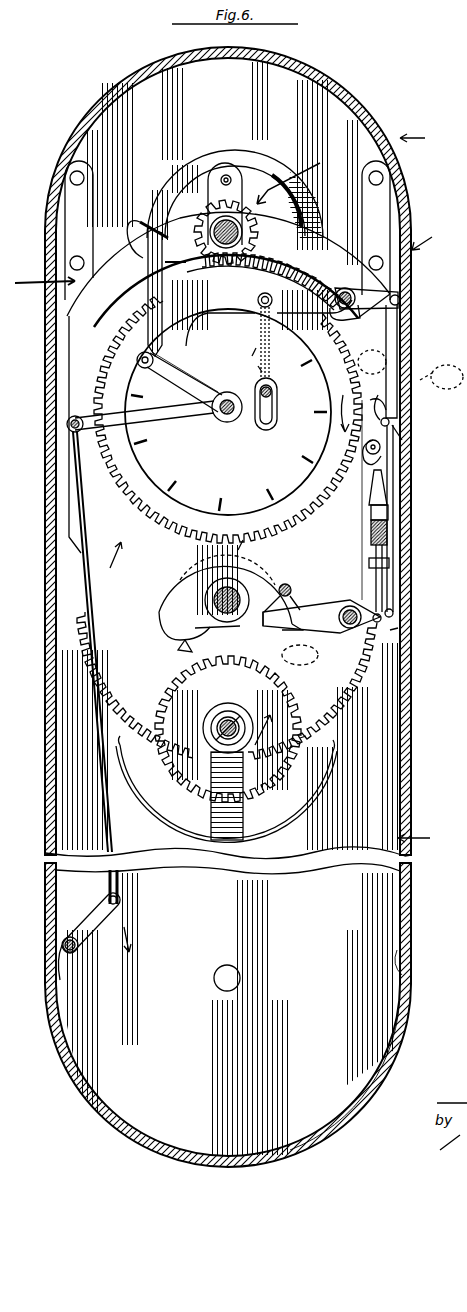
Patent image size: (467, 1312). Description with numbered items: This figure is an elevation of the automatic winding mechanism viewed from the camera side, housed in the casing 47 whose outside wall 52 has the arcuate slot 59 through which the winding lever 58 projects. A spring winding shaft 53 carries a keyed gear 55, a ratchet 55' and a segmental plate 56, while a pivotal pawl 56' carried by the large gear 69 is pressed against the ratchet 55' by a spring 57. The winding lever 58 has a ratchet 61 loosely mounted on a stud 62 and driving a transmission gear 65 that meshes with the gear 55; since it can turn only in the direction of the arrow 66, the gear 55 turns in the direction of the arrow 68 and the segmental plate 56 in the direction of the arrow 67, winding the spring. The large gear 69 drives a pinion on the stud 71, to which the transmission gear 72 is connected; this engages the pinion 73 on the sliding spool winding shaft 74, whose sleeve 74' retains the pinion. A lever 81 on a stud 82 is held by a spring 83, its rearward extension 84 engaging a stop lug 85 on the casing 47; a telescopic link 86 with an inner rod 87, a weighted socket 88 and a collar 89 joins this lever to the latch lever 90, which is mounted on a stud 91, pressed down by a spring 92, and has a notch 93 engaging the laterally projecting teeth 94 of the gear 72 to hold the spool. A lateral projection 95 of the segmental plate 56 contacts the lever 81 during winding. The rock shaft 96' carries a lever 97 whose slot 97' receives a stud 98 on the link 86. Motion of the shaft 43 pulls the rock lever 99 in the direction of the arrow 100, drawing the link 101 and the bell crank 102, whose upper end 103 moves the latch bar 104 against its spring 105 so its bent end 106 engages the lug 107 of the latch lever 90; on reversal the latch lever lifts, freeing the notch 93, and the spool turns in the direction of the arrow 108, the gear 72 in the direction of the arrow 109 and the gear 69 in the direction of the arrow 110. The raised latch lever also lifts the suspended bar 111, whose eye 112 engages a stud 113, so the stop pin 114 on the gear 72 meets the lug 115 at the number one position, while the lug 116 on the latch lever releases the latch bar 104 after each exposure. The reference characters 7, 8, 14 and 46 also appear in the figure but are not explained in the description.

The section line 7 is at (45, 273).
The section line 8 is at (414, 480).
The casing 14 is at (430, 234).
The shaft 43 is at (60, 946).
The coin position (dotted) 46 is at (441, 377).
The casing 47 is at (412, 770).
The outside wall 52 is at (404, 958).
The spring winding shaft 53 is at (205, 592).
The gear 55 is at (204, 643).
The ratchet 55' is at (300, 655).
The segmental plate 56 is at (165, 639).
The pivotal pawl 56' is at (293, 587).
The spring 57 is at (300, 612).
The winding lever 58 is at (244, 812).
The arcuate slot 59 is at (340, 770).
The ratchet 61 is at (210, 735).
The stud 62 is at (252, 704).
The transmission gear 65 is at (315, 737).
The arrow 66 is at (270, 730).
The arrow 67 is at (249, 533).
The arrow 68 is at (228, 729).
The large gear 69 is at (366, 660).
The stud 71 is at (230, 416).
The transmission gear 72 is at (100, 368).
The pinion 73 is at (258, 233).
The sliding spool winding shaft 74 is at (231, 223).
The sleeve 74' is at (214, 204).
The lever 81 is at (349, 606).
The stud 82 is at (375, 613).
The spring 83 is at (332, 632).
The rearward extension 84 is at (398, 592).
The stop lug 85 is at (400, 630).
The telescopic link 86 is at (383, 487).
The inner rod 87 is at (388, 540).
The weighted socket 88 is at (388, 512).
The collar 89 is at (390, 565).
The latch lever 90 is at (305, 296).
The stud 91 is at (365, 304).
The spring 92 is at (343, 290).
The notch 93 is at (232, 313).
The laterally projecting teeth 94 is at (330, 414).
The lateral projection 95 is at (162, 596).
The rock shaft 96' is at (369, 500).
The lever 97 is at (400, 385).
The slot 97' is at (421, 438).
The stud 98 is at (390, 422).
The rock lever 99 is at (100, 905).
The arrow 100 is at (137, 911).
The link 101 is at (94, 652).
The bell crank 102 is at (197, 414).
The upper end 103 is at (170, 376).
The latch bar 104 is at (151, 253).
The spring 105 is at (139, 353).
The laterally bent end 106 is at (131, 226).
The lug 107 is at (180, 246).
The arrow 108 is at (299, 177).
The arrow 109 is at (346, 409).
The arrow 110 is at (125, 555).
The suspended bar 111 is at (272, 330).
The eye 112 is at (266, 428).
The stud 113 is at (272, 392).
The stop pin 114 is at (241, 352).
The inwardly projecting lug 115 is at (248, 370).
The laterally projecting lug 116 is at (184, 379).